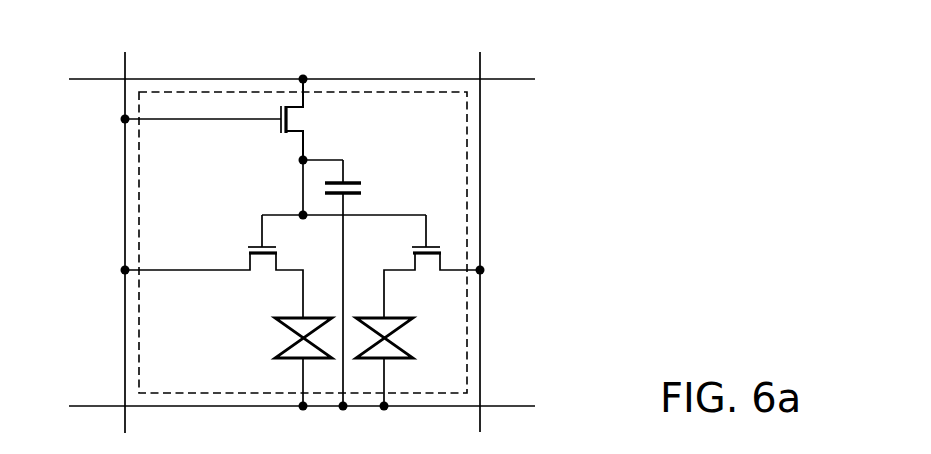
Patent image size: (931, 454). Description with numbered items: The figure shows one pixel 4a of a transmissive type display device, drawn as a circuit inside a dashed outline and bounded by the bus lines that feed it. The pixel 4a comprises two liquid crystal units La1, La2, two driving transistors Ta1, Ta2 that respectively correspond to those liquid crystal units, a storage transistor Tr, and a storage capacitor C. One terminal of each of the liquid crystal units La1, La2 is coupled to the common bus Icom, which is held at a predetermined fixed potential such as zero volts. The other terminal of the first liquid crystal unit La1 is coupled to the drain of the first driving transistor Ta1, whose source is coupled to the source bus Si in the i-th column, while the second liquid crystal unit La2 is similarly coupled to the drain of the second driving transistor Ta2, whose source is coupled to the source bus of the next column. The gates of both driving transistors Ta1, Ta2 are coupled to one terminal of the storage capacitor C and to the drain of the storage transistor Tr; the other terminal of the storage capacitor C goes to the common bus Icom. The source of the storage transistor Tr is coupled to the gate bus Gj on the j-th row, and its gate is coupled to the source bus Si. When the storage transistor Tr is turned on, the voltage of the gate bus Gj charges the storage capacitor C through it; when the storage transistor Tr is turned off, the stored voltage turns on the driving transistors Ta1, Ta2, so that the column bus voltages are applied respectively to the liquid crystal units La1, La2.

The pixel 4a is at (467, 160).
The source bus Si is at (119, 220).
The gate bus Gj is at (318, 80).
The common bus Icom is at (328, 407).
The storage transistor Tr is at (306, 121).
The storage capacitor C is at (364, 189).
The first driving transistor Ta1 is at (262, 262).
The second driving transistor Ta2 is at (426, 262).
The first liquid crystal unit La1 is at (288, 361).
The second liquid crystal unit La2 is at (400, 360).